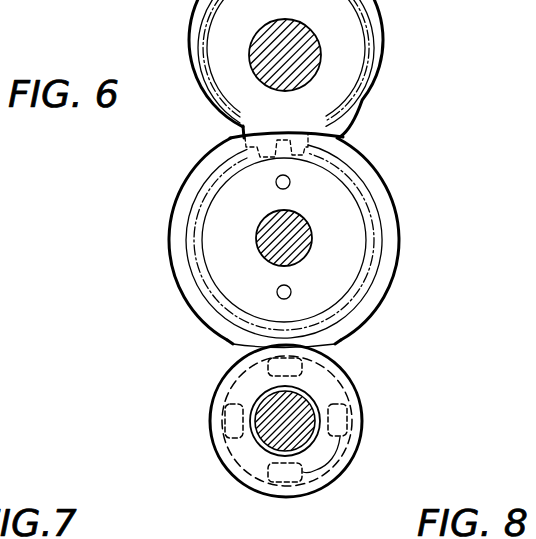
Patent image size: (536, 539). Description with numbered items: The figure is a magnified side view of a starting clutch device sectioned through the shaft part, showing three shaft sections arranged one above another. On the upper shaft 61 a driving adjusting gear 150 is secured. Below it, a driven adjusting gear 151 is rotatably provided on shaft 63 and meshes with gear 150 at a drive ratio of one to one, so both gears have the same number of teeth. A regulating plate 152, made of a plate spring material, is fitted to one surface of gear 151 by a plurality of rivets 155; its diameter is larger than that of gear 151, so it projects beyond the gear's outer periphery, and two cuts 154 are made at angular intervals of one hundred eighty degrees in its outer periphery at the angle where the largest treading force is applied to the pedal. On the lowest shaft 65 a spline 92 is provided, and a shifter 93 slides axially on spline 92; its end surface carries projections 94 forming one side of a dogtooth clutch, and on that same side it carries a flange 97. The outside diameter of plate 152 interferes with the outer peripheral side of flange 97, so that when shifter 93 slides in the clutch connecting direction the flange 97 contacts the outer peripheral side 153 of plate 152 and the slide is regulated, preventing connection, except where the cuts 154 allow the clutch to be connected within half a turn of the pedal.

The driving adjusting gear 150 is at (218, 43).
The shaft 61 is at (310, 50).
The cuts 154 is at (299, 132).
The rivets 155 is at (276, 181).
The driven adjusting gear 151 is at (186, 224).
The shaft 63 is at (293, 237).
The outer peripheral side 153 is at (180, 290).
The regulating plate 152 is at (386, 307).
The spline 92 is at (255, 403).
The shaft 65 is at (266, 430).
The flange 97 is at (223, 471).
The shifter 93 is at (261, 463).
The projections 94 is at (353, 464).